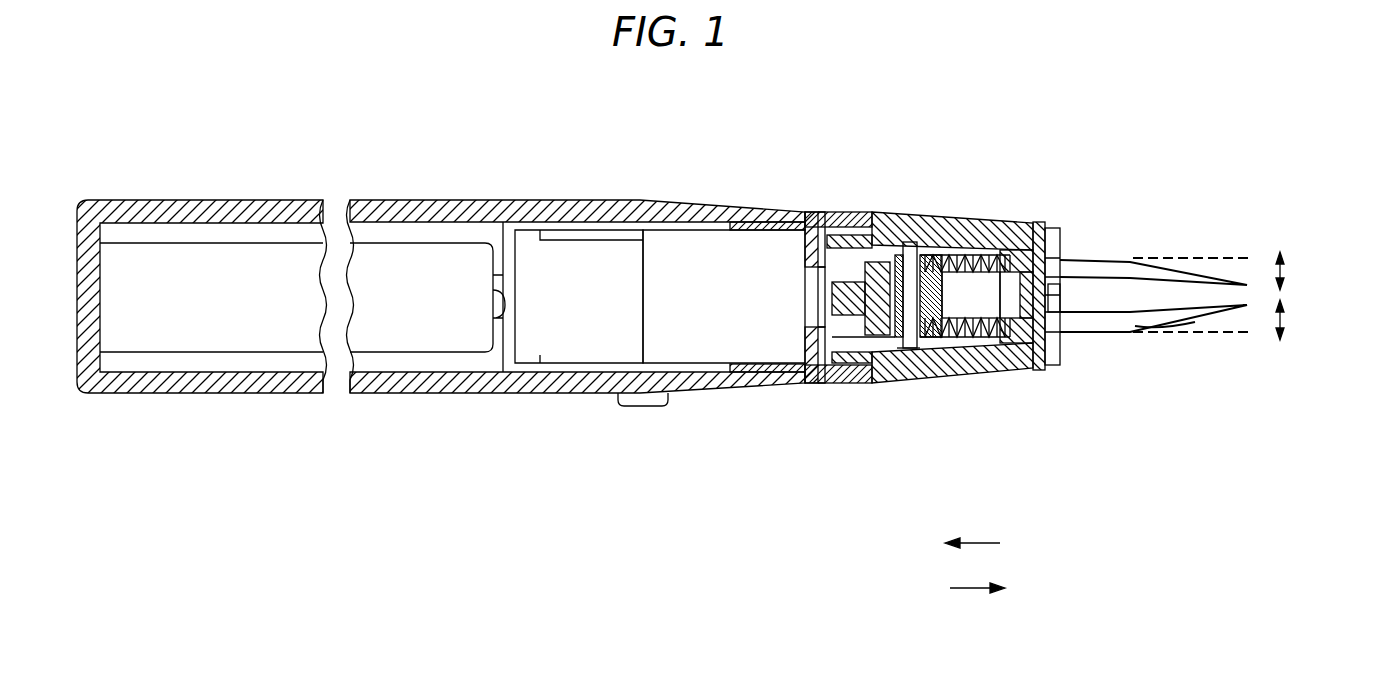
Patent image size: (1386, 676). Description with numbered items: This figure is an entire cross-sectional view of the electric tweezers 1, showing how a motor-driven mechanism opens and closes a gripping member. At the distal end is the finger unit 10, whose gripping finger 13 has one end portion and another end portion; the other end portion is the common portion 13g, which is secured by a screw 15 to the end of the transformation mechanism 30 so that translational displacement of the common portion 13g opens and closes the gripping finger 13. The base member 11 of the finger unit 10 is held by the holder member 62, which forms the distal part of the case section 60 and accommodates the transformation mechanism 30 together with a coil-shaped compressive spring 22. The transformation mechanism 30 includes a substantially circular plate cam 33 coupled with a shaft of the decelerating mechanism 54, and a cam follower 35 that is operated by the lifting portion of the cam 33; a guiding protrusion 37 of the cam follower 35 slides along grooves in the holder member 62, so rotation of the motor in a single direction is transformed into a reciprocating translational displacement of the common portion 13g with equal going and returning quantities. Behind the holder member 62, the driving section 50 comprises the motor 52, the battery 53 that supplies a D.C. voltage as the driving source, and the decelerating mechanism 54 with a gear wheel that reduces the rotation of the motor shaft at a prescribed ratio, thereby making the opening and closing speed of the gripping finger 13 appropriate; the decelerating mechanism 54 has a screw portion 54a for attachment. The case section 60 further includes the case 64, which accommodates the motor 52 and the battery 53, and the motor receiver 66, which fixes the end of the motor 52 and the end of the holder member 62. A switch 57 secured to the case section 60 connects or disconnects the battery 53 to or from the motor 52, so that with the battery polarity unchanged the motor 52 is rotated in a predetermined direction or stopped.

The electric tweezers 1 is at (1110, 124).
The finger unit 10 is at (1155, 307).
The base member 11 is at (1055, 372).
The gripping finger 13 is at (1117, 262).
The common portion 13g is at (1062, 322).
The screw 15 is at (1071, 270).
The coil-shaped compressive spring 22 is at (984, 262).
The transformation mechanism 30 is at (887, 250).
The cam 33 is at (873, 262).
The cam follower 35 is at (955, 275).
The guiding protrusion 37 is at (913, 350).
The driving section 50 is at (660, 299).
The motor 52 is at (573, 240).
The battery 53 is at (430, 253).
The decelerating mechanism 54 is at (690, 240).
The screw portion 54a is at (815, 212).
The switch 57 is at (645, 408).
The case section 60 is at (472, 397).
The holder member 62 is at (983, 378).
The case 64 is at (397, 395).
The motor receiver 66 is at (845, 383).